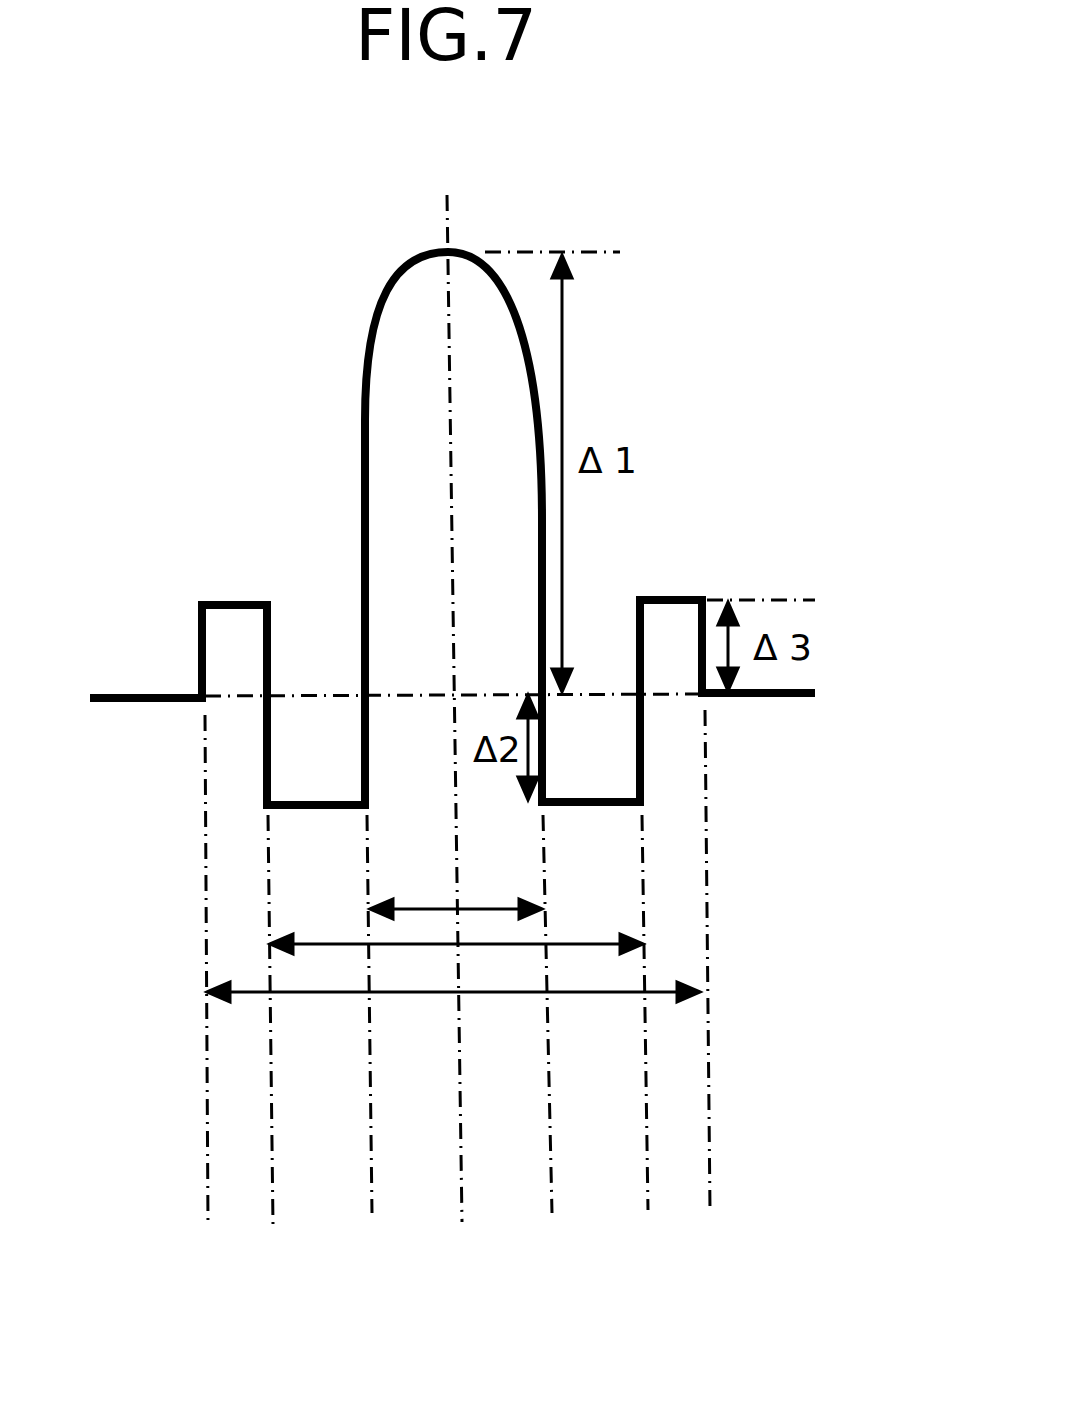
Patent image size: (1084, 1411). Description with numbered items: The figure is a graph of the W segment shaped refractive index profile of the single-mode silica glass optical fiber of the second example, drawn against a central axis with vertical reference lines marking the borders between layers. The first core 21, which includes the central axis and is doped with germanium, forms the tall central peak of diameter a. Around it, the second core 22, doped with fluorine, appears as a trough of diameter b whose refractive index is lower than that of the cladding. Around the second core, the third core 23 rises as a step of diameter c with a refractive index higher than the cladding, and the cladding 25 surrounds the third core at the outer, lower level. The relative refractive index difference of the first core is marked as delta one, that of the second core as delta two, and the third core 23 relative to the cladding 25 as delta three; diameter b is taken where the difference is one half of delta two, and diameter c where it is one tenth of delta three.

The first core 21 is at (492, 1183).
The second core 22 is at (590, 1183).
The third core 23 is at (682, 1183).
The cladding 25 is at (755, 937).